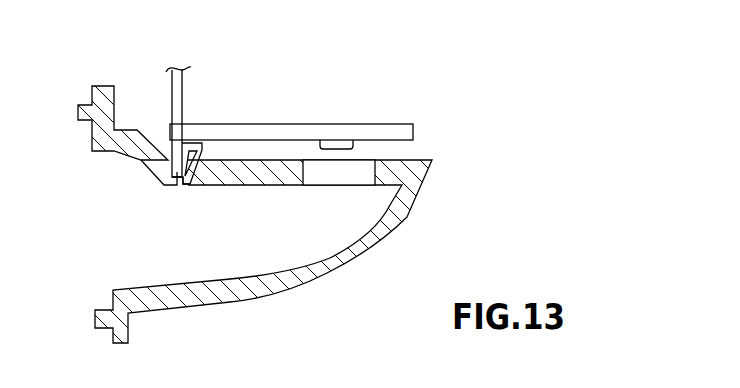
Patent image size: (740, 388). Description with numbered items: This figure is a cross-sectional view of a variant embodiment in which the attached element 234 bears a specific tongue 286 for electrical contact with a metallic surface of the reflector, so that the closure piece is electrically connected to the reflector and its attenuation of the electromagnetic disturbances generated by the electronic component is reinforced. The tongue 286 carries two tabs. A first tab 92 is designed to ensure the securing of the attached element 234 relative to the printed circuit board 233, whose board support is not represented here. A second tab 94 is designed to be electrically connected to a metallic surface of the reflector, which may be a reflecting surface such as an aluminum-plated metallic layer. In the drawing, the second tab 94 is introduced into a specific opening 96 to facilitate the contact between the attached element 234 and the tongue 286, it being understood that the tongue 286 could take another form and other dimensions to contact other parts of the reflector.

The attached element 234 is at (184, 76).
The printed circuit board 233 is at (278, 122).
The tongue 286 is at (165, 148).
The first tab 92 is at (202, 144).
The opening 96 is at (164, 170).
The second tab 94 is at (180, 186).